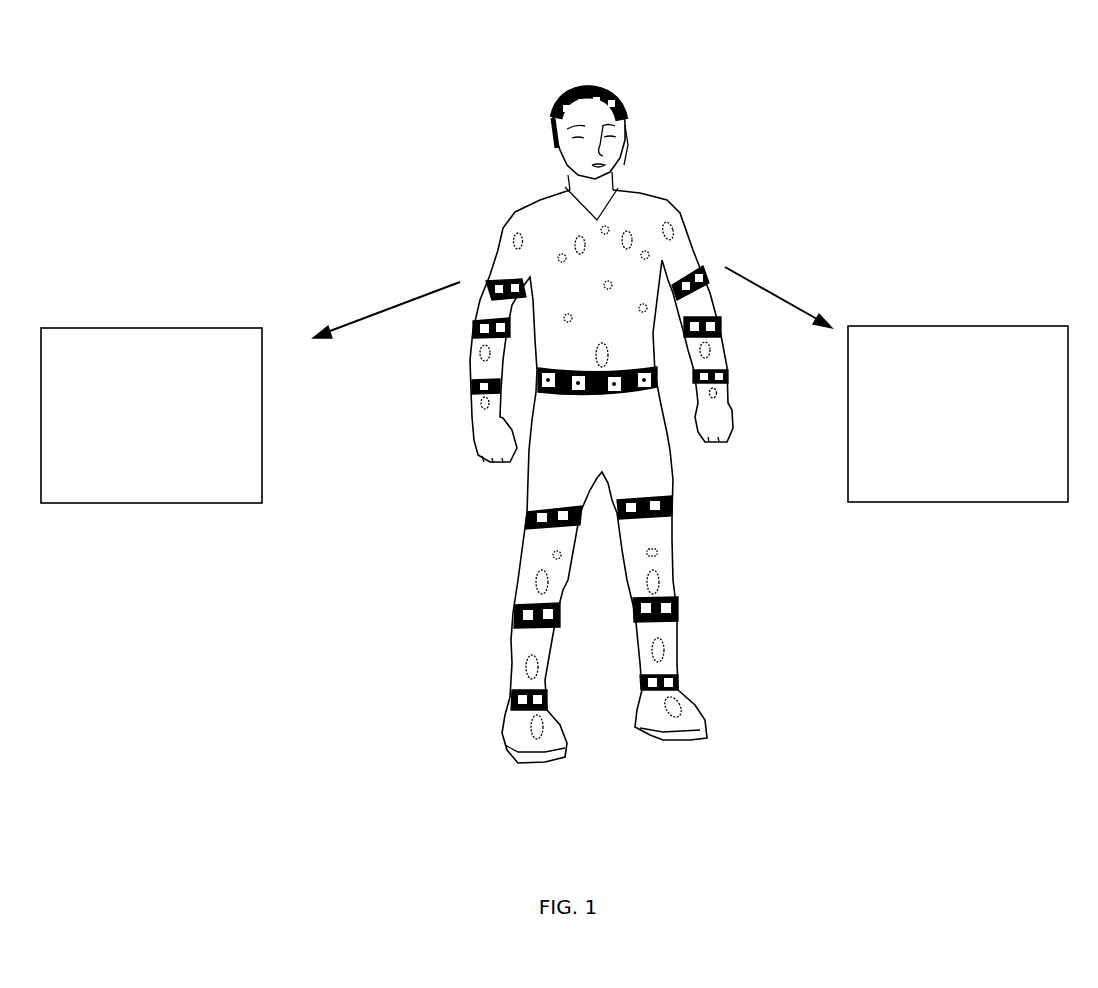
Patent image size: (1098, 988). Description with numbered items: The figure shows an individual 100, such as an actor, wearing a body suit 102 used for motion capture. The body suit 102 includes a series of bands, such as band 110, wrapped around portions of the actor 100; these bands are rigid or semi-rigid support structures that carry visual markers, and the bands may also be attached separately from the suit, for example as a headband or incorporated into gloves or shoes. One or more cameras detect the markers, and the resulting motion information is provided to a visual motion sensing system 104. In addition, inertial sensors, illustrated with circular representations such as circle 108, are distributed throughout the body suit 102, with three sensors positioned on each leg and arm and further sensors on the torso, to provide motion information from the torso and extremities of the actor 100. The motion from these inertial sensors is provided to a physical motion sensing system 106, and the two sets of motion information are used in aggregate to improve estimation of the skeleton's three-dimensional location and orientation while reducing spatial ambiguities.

The individual 100 is at (636, 76).
The body suit 102 is at (664, 197).
The visual motion sensing system 104 is at (108, 326).
The physical motion sensing system 106 is at (1003, 325).
The circle 108 is at (508, 235).
The band 110 is at (490, 285).